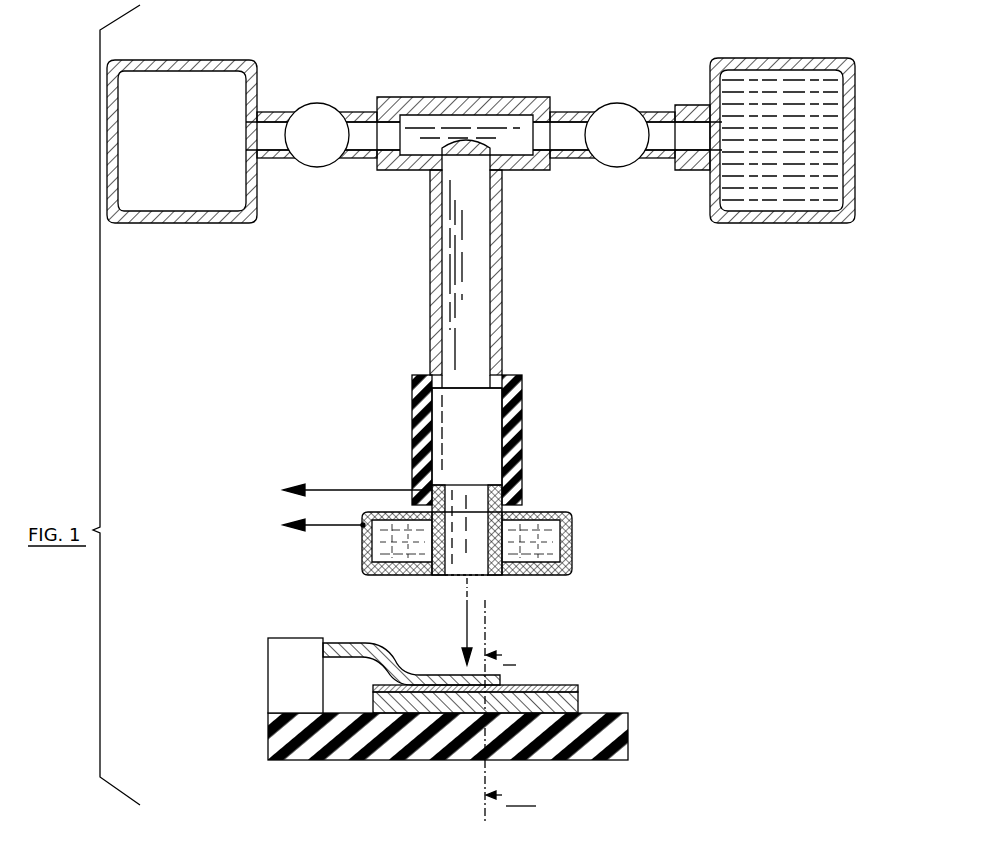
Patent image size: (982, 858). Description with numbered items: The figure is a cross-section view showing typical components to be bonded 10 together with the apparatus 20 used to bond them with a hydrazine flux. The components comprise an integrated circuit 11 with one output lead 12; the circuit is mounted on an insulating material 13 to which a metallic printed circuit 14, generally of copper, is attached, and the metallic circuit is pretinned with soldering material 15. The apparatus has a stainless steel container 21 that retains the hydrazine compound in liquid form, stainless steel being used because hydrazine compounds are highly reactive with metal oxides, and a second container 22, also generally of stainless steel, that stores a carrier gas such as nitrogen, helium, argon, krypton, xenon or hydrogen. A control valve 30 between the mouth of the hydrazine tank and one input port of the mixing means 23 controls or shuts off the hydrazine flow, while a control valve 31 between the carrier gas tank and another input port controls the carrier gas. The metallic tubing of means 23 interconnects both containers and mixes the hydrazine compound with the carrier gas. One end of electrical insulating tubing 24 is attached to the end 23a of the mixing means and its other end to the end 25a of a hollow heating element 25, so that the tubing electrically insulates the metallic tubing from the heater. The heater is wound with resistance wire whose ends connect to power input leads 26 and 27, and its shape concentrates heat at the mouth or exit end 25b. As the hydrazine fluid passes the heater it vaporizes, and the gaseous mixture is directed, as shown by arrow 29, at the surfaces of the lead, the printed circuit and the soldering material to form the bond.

The components to be bonded 10 is at (620, 661).
The integrated circuit 11 is at (290, 681).
The output lead 12 is at (374, 647).
The insulating material 13 is at (625, 715).
The metallic printed circuit 14 is at (578, 700).
The soldering material 15 is at (567, 686).
The apparatus 20 is at (604, 301).
The stainless steel container 21 is at (815, 138).
The container 22 is at (200, 88).
The means for mixing 23 is at (495, 223).
The end of means 23a is at (462, 362).
The electrical insulating tubing 24 is at (518, 425).
The hollow heating element 25 is at (570, 545).
The end of heating element 25a is at (477, 498).
The exit end 25b is at (455, 567).
The power input lead 26 is at (300, 487).
The power input lead 27 is at (298, 529).
The arrow 29 is at (471, 600).
The control valve 30 is at (611, 127).
The control valve 31 is at (314, 120).